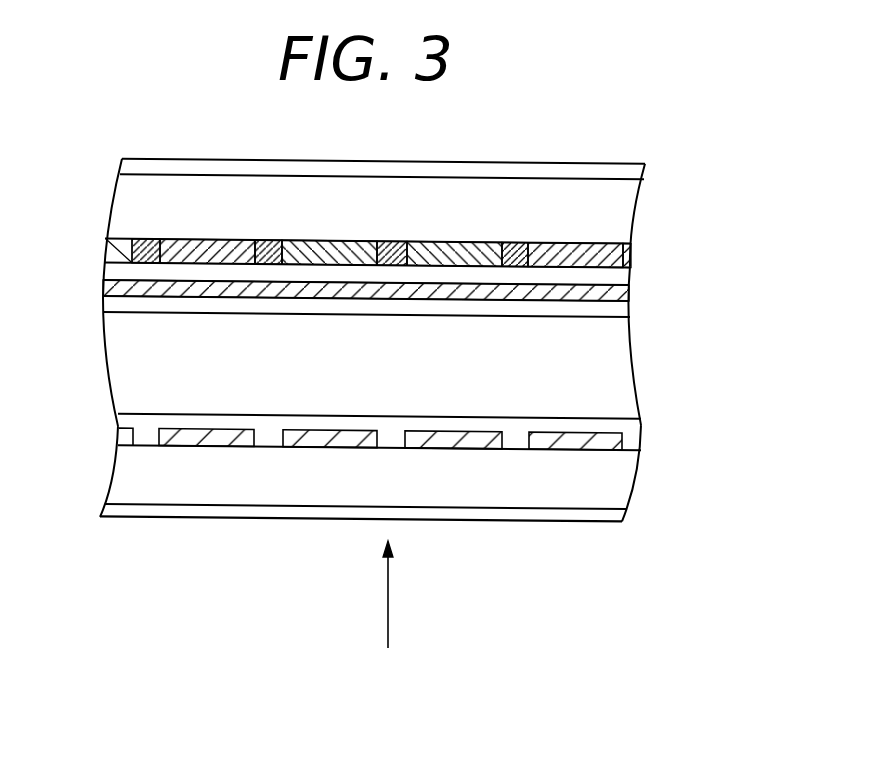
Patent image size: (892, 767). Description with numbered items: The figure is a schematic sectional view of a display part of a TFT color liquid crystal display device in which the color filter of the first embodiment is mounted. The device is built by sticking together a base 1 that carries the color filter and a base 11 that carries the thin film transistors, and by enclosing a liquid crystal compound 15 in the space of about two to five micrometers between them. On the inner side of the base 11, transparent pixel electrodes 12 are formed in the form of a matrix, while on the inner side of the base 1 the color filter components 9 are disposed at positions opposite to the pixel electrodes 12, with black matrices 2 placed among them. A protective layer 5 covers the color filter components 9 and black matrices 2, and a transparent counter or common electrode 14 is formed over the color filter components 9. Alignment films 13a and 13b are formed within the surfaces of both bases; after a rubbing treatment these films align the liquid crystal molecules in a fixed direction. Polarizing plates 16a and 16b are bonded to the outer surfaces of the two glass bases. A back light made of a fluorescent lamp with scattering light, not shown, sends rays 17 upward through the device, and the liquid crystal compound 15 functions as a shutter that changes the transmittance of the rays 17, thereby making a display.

The base 1 is at (630, 212).
The black matrix 2 is at (628, 262).
The protective layer 5 is at (618, 280).
The color filter component 9 is at (480, 245).
The base 11 is at (627, 493).
The transparent pixel electrode 12 is at (618, 452).
The alignment film 13a is at (635, 433).
The alignment film 13b is at (625, 312).
The transparent counter electrode 14 is at (627, 297).
The liquid crystal compound 15 is at (632, 385).
The polarizing plate 16a is at (600, 515).
The polarizing plate 16b is at (603, 168).
The rays 17 is at (388, 598).